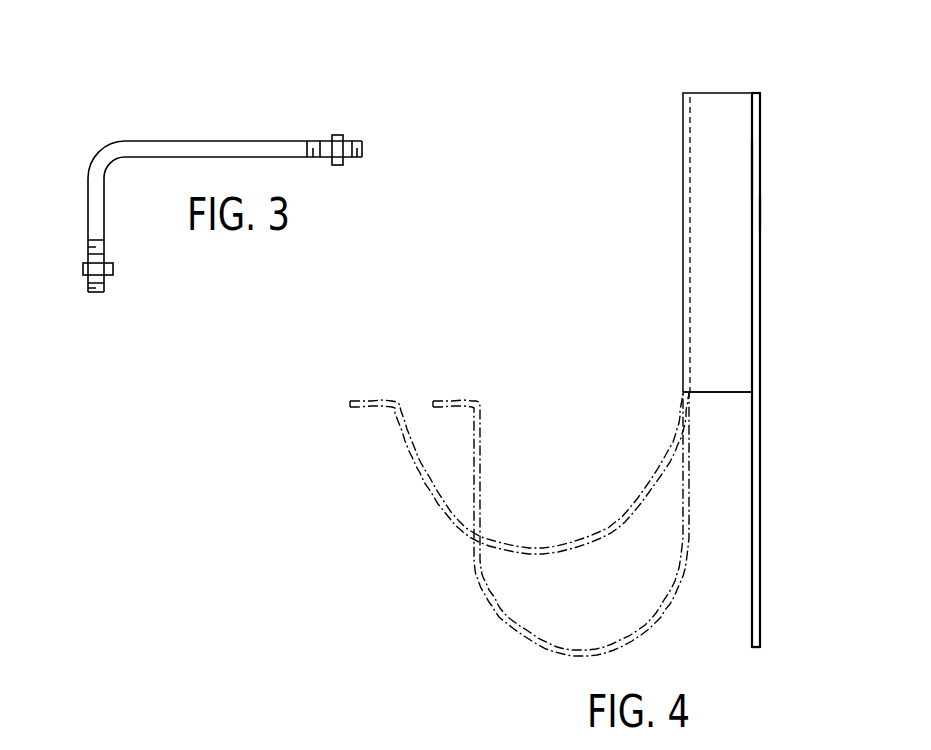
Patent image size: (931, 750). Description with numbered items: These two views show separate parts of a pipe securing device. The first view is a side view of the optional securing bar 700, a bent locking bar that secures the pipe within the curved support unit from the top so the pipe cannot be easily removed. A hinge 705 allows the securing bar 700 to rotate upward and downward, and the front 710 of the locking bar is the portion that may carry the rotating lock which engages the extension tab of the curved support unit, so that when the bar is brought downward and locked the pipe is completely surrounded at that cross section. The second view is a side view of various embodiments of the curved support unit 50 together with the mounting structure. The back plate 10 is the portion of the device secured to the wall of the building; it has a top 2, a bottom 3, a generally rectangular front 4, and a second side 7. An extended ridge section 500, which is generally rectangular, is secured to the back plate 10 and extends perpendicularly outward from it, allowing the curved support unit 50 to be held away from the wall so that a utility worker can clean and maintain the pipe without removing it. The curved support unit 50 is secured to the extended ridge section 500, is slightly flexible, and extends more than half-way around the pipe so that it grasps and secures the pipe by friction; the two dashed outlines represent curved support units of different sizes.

In FIG. 3, the securing bar 700 is at (173, 141).
In FIG. 3, the hinge 705 is at (338, 135).
In FIG. 3, the front of the locking bar 710 is at (83, 270).
In FIG. 4, the top 2 is at (757, 92).
In FIG. 4, the back plate 10 is at (761, 125).
In FIG. 4, the front 4 is at (752, 184).
In FIG. 4, the second side 7 is at (757, 210).
In FIG. 4, the bottom 3 is at (756, 648).
In FIG. 4, the extended ridge section 500 is at (715, 367).
In FIG. 4, the curved support unit 50 is at (500, 612).